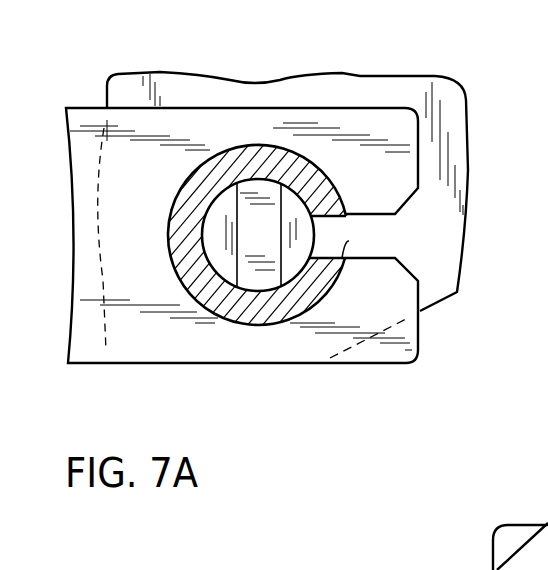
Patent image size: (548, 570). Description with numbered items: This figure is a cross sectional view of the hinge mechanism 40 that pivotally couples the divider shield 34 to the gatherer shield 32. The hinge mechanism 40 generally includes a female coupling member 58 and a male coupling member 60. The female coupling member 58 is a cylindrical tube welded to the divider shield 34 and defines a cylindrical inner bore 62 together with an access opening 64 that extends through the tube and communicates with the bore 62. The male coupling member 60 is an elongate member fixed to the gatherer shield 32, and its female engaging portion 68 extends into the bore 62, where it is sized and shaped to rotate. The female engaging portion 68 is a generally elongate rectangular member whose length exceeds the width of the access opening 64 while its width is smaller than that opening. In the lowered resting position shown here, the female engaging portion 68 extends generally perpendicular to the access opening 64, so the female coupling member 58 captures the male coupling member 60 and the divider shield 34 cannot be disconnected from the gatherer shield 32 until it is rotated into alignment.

The gatherer shield 32 is at (343, 73).
The divider shield 34 is at (130, 363).
The hinge mechanism 40 is at (388, 65).
The female coupling member 58 is at (229, 321).
The male coupling member 60 is at (225, 235).
The bore 62 is at (220, 213).
The access opening 64 is at (349, 241).
The female engaging portion 68 is at (282, 264).